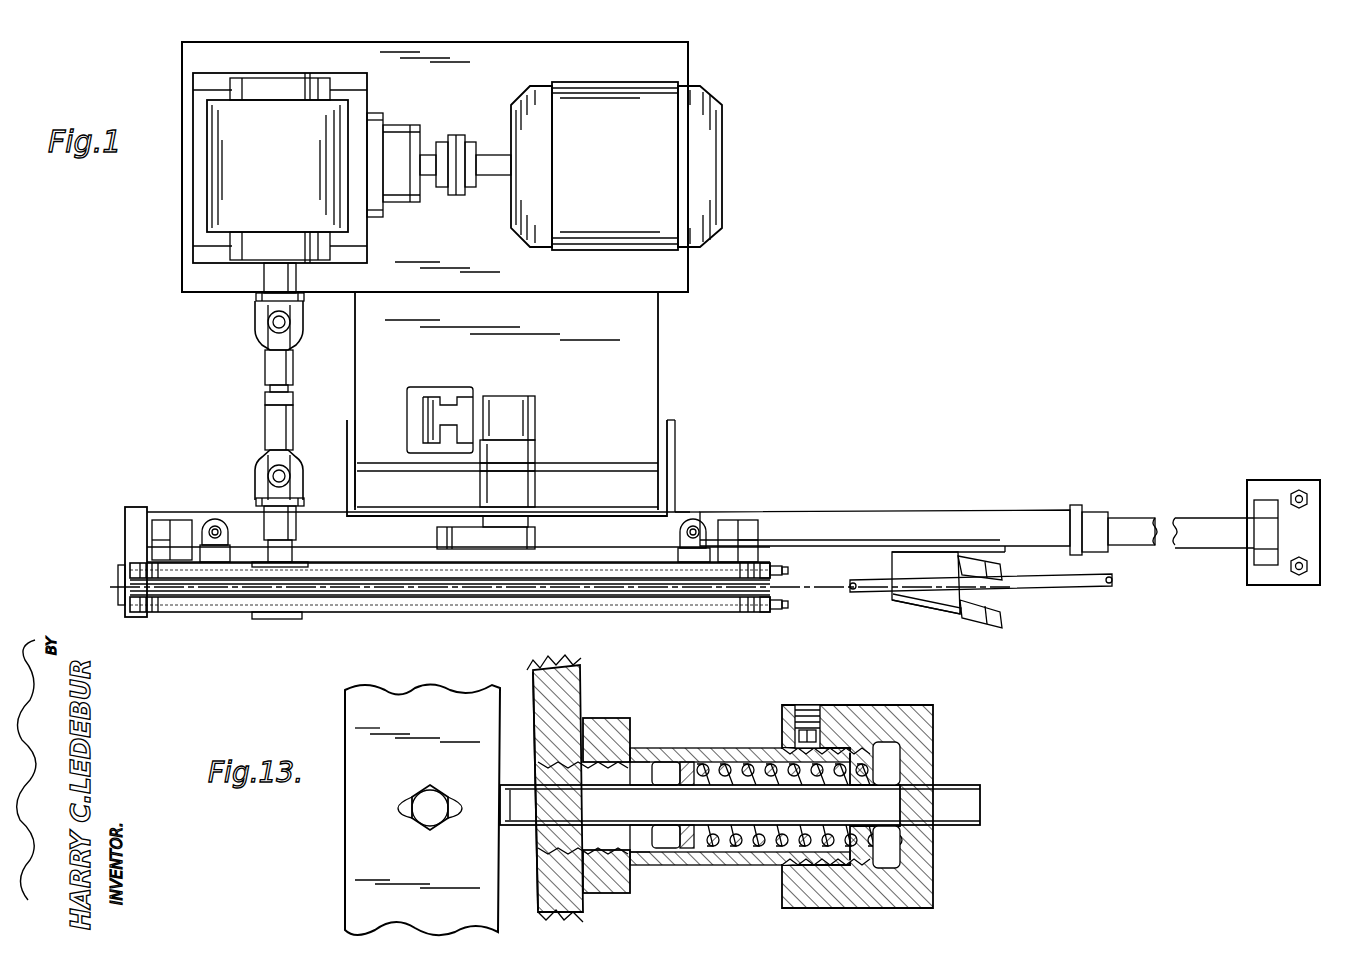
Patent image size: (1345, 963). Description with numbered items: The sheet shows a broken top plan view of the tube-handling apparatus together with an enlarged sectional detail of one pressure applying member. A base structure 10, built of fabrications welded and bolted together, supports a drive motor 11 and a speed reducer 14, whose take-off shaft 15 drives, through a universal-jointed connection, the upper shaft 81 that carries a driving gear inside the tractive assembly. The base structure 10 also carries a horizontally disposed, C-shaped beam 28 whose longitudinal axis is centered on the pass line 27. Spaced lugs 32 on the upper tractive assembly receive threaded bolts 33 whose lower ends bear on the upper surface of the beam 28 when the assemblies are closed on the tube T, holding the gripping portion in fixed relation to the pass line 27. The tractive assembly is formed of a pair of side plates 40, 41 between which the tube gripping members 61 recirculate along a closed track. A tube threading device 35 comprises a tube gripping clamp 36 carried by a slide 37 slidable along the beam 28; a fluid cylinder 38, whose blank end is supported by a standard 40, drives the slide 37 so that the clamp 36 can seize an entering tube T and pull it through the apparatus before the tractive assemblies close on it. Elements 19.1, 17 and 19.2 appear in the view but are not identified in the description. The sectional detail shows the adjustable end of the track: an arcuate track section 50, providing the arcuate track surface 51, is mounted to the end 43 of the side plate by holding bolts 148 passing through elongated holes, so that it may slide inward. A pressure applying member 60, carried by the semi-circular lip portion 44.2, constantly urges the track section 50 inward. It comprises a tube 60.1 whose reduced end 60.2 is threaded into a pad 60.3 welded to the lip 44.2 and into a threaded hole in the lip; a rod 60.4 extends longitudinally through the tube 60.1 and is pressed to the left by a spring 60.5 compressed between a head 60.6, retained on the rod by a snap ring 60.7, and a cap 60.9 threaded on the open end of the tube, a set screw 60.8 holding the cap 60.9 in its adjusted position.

In FIG. 1, the base structure 10 is at (703, 267).
In FIG. 1, the drive motor 11 is at (662, 133).
In FIG. 1, the speed reducer 14 is at (207, 192).
In FIG. 1, the take-off shaft 15 is at (264, 283).
In FIG. 1, the upper shaft 81 is at (292, 545).
In FIG. 1, the upper bearing bracket 19.1 is at (530, 402).
In FIG. 1, the bearing block 17 is at (528, 488).
In FIG. 1, the lower bearing bracket 19.2 is at (535, 532).
In FIG. 1, the pass line 27 is at (75, 586).
In FIG. 1, the standard 40 is at (1265, 483).
In FIG. 1, the lugs 32 is at (208, 520).
In FIG. 1, the bolts 33 is at (218, 525).
In FIG. 1, the side plate 41 is at (335, 615).
In FIG. 1, the tube gripping members 61 is at (398, 608).
In FIG. 1, the pressure applying member 60 is at (788, 578).
In FIG. 13, the pressure applying member 60 is at (678, 745).
In FIG. 1, the beam 28 is at (828, 510).
In FIG. 1, the fluid cylinder 38 is at (1188, 525).
In FIG. 1, the slide 37 is at (907, 560).
In FIG. 1, the tube gripping clamp 36 is at (918, 605).
In FIG. 1, the tube threading device 35 is at (936, 625).
In FIG. 1, the tube T is at (1085, 592).
In FIG. 13, the arcuate track section 50 is at (365, 868).
In FIG. 13, the arcuate track surface 51 is at (420, 805).
In FIG. 13, the holding bolts 148 is at (370, 848).
In FIG. 13, the end 43 is at (583, 668).
In FIG. 13, the semi-circular portions 44.2 is at (533, 672).
In FIG. 13, the pad 60.3 is at (608, 730).
In FIG. 13, the snap ring 60.7 is at (615, 893).
In FIG. 13, the reduced end 60.2 is at (538, 870).
In FIG. 13, the rod 60.4 is at (975, 800).
In FIG. 13, the tube 60.1 is at (672, 870).
In FIG. 13, the head 60.6 is at (700, 762).
In FIG. 13, the spring 60.5 is at (748, 870).
In FIG. 13, the cap 60.9 is at (933, 870).
In FIG. 13, the set screw 60.8 is at (808, 710).